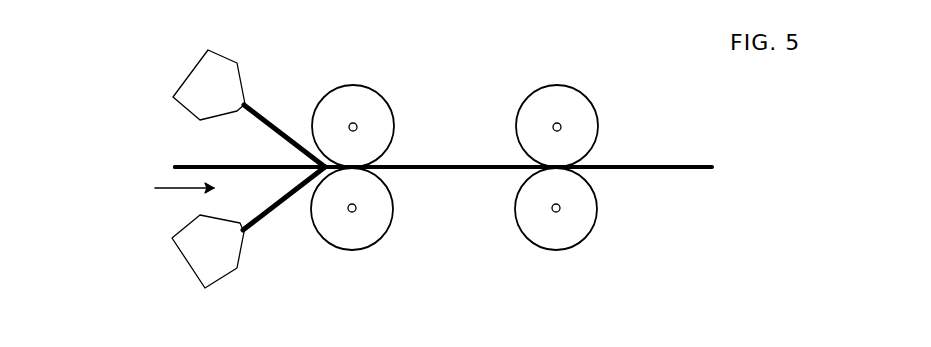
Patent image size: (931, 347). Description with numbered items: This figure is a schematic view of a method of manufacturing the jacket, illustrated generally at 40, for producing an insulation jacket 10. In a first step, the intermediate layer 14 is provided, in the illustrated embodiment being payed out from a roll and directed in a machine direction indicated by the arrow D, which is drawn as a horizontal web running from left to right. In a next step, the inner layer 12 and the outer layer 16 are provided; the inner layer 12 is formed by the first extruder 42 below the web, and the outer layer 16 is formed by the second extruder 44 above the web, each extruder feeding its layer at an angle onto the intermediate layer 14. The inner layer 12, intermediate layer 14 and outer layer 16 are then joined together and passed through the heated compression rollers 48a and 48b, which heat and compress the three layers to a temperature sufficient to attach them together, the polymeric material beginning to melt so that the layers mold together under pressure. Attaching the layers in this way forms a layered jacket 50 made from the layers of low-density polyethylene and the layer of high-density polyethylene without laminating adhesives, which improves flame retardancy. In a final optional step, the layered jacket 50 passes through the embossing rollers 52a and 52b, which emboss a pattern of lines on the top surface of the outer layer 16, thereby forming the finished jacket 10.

The method of manufacturing the jacket 40 is at (118, 37).
The jacket 10 is at (666, 166).
The layered jacket 50 is at (456, 166).
The intermediate layer 14 is at (200, 166).
The outer layer 16 is at (276, 124).
The inner layer 12 is at (270, 211).
The second extruder 44 is at (225, 57).
The first extruder 42 is at (219, 280).
The heated compression roller 48a is at (386, 101).
The heated compression roller 48b is at (363, 250).
The embossing roller 52a is at (592, 108).
The embossing roller 52b is at (569, 249).